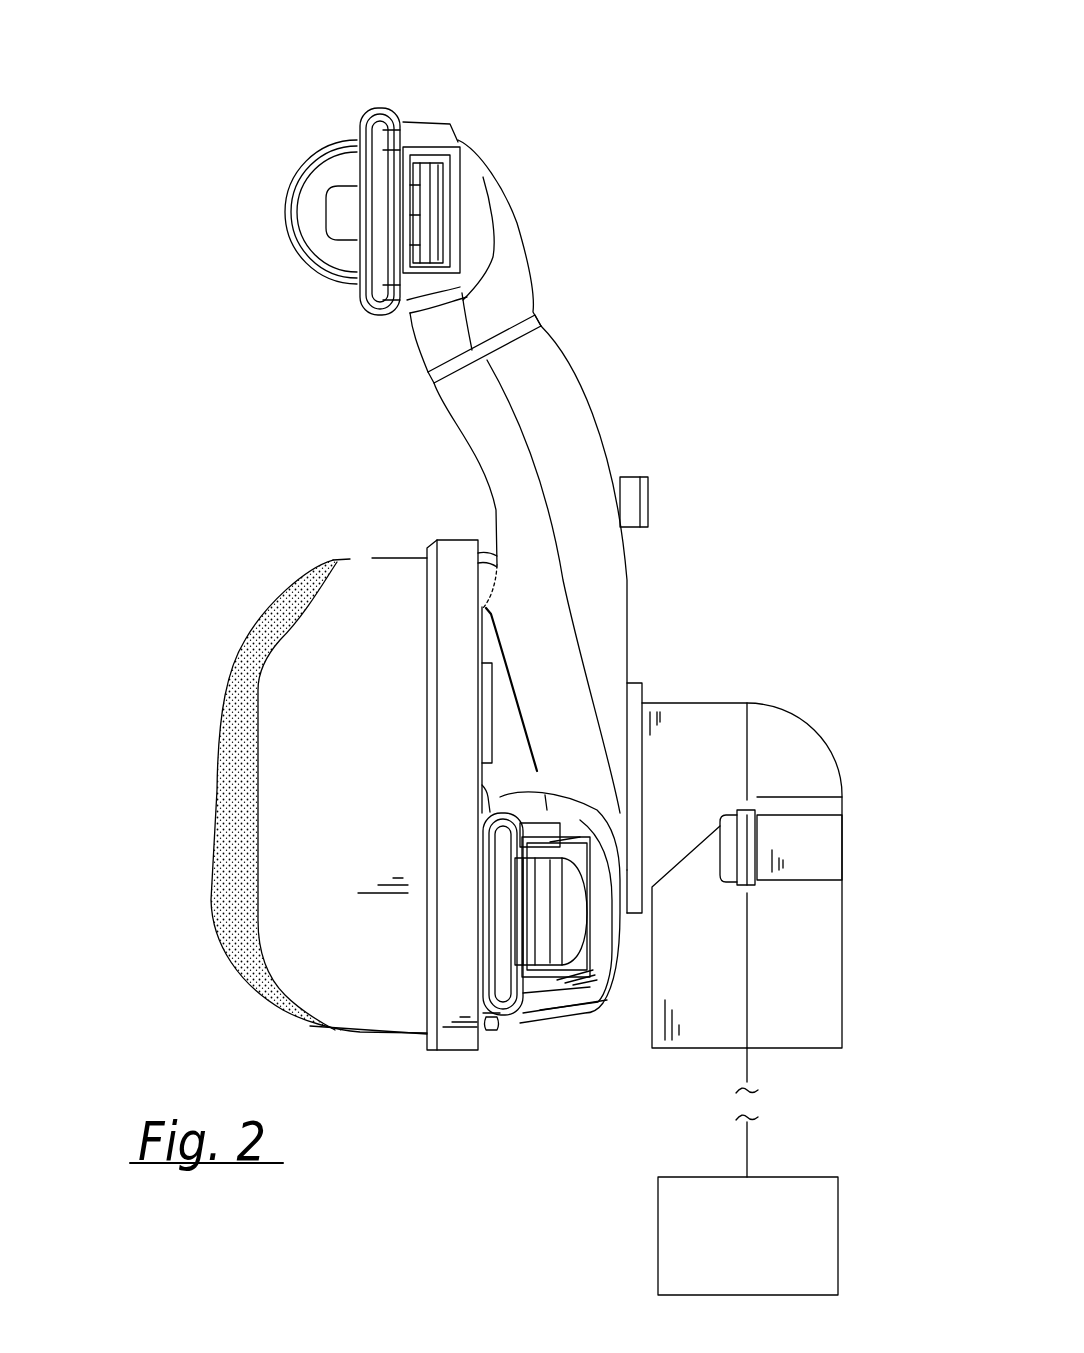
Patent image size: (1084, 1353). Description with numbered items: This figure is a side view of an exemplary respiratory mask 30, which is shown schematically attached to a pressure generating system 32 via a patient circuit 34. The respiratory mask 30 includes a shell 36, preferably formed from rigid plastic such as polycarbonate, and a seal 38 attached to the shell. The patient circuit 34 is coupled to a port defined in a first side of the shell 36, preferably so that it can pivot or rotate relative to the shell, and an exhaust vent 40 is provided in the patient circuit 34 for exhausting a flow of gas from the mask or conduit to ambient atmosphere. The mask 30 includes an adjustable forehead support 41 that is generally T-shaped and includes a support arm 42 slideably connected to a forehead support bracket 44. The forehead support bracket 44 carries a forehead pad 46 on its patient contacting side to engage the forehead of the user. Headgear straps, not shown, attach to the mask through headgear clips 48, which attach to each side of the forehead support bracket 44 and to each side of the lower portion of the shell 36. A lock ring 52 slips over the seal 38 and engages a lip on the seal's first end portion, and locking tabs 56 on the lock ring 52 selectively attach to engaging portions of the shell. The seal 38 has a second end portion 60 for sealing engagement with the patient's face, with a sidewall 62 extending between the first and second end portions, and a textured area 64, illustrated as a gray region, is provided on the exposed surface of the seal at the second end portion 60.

The respiratory mask 30 is at (723, 186).
The pressure generating system 32 is at (760, 1259).
The patient circuit 34 is at (826, 1029).
The shell 36 is at (610, 633).
The seal 38 is at (367, 1010).
The exhaust vent 40 is at (850, 840).
The adjustable forehead support 41 is at (346, 380).
The support arm 42 is at (565, 389).
The forehead support bracket 44 is at (503, 236).
The forehead pad 46 is at (306, 213).
The headgear clips 48 is at (372, 108).
The lock ring 52 is at (451, 545).
The locking tabs 56 is at (490, 697).
The second end portion 60 is at (218, 788).
The sidewall 62 is at (364, 600).
The textured area 64 is at (236, 715).